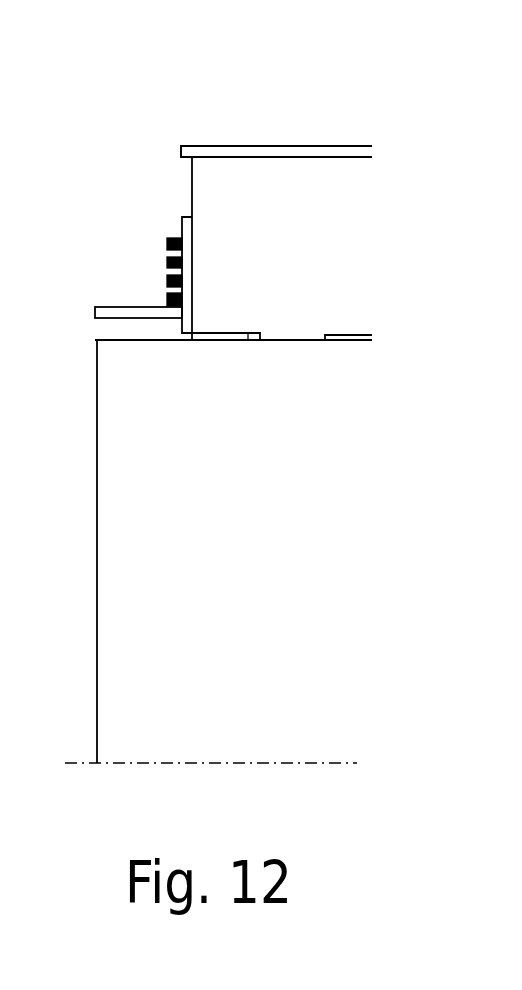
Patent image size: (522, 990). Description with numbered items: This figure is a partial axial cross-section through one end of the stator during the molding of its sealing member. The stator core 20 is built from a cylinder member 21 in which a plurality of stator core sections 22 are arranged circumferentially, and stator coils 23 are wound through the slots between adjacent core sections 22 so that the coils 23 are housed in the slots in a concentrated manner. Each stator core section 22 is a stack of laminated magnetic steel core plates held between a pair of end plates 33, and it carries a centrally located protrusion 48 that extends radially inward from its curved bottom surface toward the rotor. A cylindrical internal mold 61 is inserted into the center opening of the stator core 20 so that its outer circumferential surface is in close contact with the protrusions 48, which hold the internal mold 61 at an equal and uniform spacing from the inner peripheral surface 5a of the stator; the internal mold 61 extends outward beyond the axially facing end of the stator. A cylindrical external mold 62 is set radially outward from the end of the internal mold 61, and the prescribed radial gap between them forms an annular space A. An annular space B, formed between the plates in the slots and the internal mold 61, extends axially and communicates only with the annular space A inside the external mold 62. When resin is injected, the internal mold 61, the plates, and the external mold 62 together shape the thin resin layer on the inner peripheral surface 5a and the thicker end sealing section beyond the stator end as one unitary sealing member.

The stator core 20 is at (305, 147).
The cylinder member 21 is at (217, 146).
The stator core section 22 is at (243, 185).
The stator coil 23 is at (167, 238).
The end plate 33 is at (181, 218).
The protrusion 48 is at (297, 341).
The cylindrical internal mold 61 is at (96, 375).
The cylindrical external mold 62 is at (113, 313).
The inner peripheral surface 5a is at (248, 333).
The annular space A is at (122, 330).
The annular space B is at (223, 339).